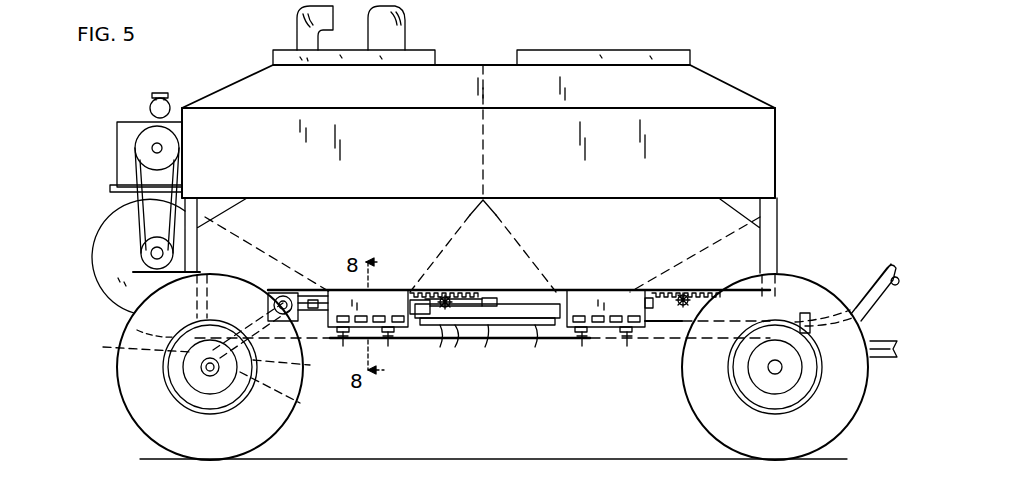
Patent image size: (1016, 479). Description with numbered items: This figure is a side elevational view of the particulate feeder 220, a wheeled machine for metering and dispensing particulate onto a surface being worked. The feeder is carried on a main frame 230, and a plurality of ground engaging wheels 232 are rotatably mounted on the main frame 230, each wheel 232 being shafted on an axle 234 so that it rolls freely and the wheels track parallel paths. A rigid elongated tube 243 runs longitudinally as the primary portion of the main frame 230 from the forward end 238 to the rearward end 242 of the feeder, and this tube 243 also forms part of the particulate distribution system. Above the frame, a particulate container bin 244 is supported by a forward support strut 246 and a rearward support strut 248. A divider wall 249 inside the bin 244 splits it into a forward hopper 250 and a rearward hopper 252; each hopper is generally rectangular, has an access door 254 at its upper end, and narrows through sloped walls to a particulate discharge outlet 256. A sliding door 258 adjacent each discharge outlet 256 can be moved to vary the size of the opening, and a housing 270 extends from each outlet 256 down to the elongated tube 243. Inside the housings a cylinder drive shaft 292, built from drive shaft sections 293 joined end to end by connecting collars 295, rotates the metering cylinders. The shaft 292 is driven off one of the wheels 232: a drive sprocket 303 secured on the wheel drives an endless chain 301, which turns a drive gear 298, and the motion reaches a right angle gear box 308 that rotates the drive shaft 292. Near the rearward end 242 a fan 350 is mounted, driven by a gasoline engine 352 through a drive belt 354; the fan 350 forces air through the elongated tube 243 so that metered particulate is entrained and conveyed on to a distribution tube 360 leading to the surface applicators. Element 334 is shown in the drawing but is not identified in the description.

The particulate feeder 220 is at (780, 100).
The particulate container bin 244 is at (469, 64).
The access door 254 is at (273, 58).
The rearward hopper 252 is at (340, 153).
The forward hopper 250 is at (629, 153).
The divider wall 249 is at (487, 138).
The forward end 238 is at (774, 152).
The rearward end 242 is at (184, 140).
The rearward support strut 248 is at (200, 258).
The forward support strut 246 is at (778, 222).
The right angle gear box 308 is at (283, 294).
The connecting collar 295 is at (313, 299).
The particulate discharge outlet 256 is at (392, 290).
The housing 270 is at (353, 291).
The sliding door 258 is at (430, 291).
The cylinder drive shaft 292 is at (494, 300).
The drive shaft section 293 is at (483, 383).
The mounting pins 334 is at (608, 332).
The main frame 230 is at (563, 346).
The elongated tube 243 is at (417, 340).
The ground engaging wheel 232 is at (262, 432).
The axle 234 is at (210, 375).
The endless chain 301 is at (176, 333).
The drive gear 298 is at (301, 363).
The drive sprocket 303 is at (291, 397).
The fan 350 is at (110, 240).
The gasoline engine 352 is at (126, 122).
The drive belt 354 is at (180, 172).
The distribution tube 360 is at (865, 268).